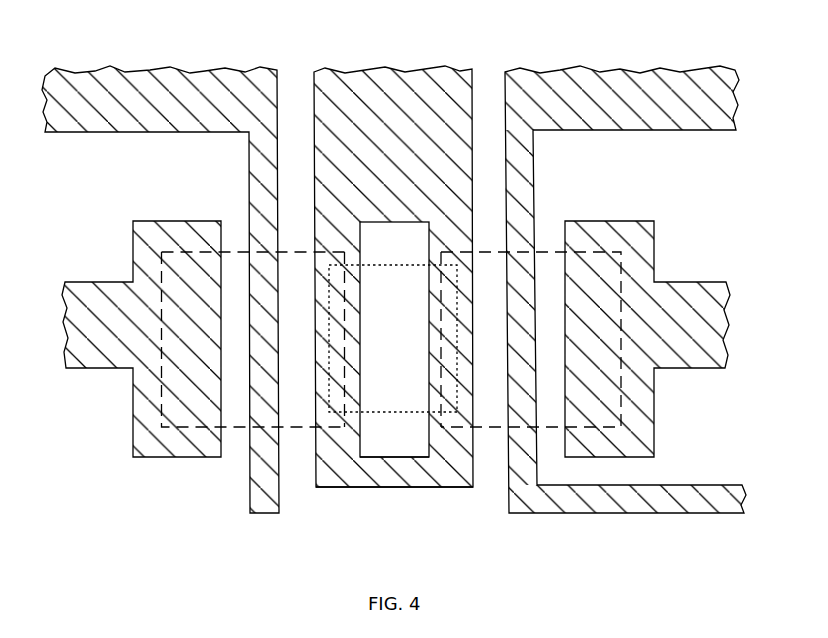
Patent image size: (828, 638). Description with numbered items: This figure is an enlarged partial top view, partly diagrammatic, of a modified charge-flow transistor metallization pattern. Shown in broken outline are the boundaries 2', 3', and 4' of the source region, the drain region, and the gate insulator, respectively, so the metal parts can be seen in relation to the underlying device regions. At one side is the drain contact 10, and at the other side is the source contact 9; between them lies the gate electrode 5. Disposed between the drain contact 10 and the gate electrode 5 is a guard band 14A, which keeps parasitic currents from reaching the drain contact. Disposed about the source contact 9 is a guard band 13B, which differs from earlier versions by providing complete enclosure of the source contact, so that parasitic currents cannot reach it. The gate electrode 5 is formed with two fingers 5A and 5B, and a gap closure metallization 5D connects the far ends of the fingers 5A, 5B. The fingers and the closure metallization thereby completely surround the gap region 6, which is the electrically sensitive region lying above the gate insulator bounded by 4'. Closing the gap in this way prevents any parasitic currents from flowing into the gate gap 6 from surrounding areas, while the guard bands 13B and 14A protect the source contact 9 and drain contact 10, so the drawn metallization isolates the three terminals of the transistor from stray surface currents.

The boundary of the source region 2' is at (576, 207).
The boundary of the drain region 3' is at (213, 202).
The boundary of the gate insulator 4' is at (453, 195).
The gate electrode 5 is at (402, 143).
The finger 5A is at (463, 330).
The finger 5B is at (323, 340).
The gap closure metallization 5D is at (423, 487).
The gap region 6 is at (385, 248).
The source contact 9 is at (653, 260).
The drain contact 10 is at (133, 247).
The guard band 13B is at (695, 513).
The guard band 14A is at (250, 487).